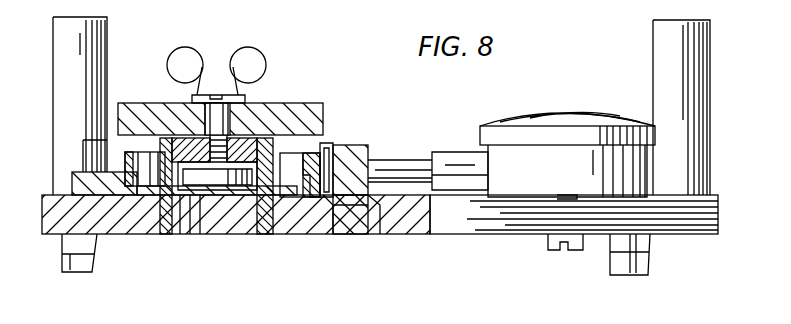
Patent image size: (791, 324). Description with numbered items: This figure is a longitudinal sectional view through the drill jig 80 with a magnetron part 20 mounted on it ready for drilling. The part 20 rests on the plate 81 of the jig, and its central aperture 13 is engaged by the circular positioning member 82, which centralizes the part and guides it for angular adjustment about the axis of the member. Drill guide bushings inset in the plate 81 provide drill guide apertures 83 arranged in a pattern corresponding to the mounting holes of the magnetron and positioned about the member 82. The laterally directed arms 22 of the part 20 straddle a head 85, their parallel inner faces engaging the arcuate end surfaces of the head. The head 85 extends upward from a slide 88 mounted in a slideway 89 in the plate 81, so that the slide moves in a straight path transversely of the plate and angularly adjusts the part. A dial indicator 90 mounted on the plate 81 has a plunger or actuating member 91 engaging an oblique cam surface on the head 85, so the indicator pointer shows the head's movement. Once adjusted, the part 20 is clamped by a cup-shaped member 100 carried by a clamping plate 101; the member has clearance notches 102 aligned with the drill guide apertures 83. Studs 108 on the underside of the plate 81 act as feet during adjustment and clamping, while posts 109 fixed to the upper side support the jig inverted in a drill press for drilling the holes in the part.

The central aperture 13 is at (195, 210).
The magnetron component or part 20 is at (300, 213).
The laterally directed arms 22 is at (330, 143).
The drill jig 80 is at (528, 70).
The plate 81 is at (458, 234).
The circular positioning member 82 is at (213, 180).
The drill guide apertures 83 is at (165, 234).
The head 85 is at (360, 147).
The slide 88 is at (390, 213).
The slideway 89 is at (348, 225).
The dial indicator 90 is at (585, 112).
The plunger or actuating member 91 is at (404, 160).
The cup-shaped member 100 is at (250, 137).
The clamping plate 101 is at (315, 138).
The clearance notches 102 is at (162, 140).
The studs 108 is at (72, 258).
The posts 109 is at (88, 45).